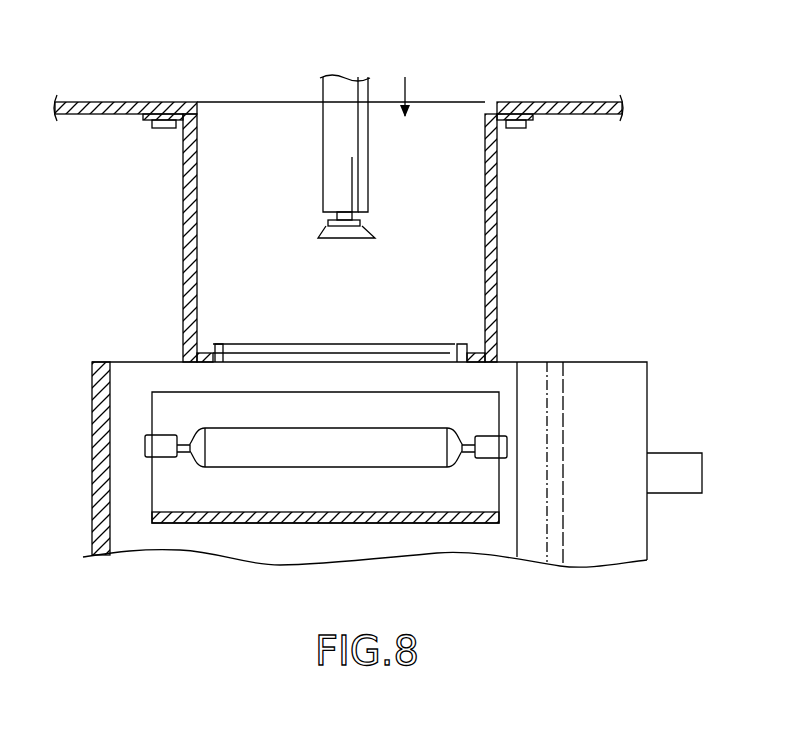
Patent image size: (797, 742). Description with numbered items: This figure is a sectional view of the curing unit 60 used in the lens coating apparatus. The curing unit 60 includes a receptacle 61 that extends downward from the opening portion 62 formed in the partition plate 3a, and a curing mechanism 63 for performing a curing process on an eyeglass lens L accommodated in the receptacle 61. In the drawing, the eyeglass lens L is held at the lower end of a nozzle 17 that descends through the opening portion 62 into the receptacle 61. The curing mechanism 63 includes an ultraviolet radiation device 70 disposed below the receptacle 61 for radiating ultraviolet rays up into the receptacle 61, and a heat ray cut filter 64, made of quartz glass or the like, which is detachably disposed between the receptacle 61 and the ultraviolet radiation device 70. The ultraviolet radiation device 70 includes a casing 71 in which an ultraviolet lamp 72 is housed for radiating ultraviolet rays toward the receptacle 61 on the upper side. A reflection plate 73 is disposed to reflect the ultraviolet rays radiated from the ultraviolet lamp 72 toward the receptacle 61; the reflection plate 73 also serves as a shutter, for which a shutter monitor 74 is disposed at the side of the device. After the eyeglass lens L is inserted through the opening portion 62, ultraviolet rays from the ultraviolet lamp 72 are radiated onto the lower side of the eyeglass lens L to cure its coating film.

The partition plate 3a is at (116, 101).
The curing unit 60 is at (325, 193).
The receptacle 61 is at (183, 187).
The opening portion 62 is at (262, 106).
The suction nozzle 17 is at (326, 165).
The eyeglass lens L is at (320, 229).
The curing mechanism 63 is at (341, 307).
The heat ray cut filter 64 is at (390, 344).
The ultraviolet radiation device 70 is at (336, 485).
The casing 71 is at (96, 423).
The ultraviolet lamp 72 is at (312, 455).
The reflection plate 73 is at (388, 495).
The shutter monitor 74 is at (673, 461).